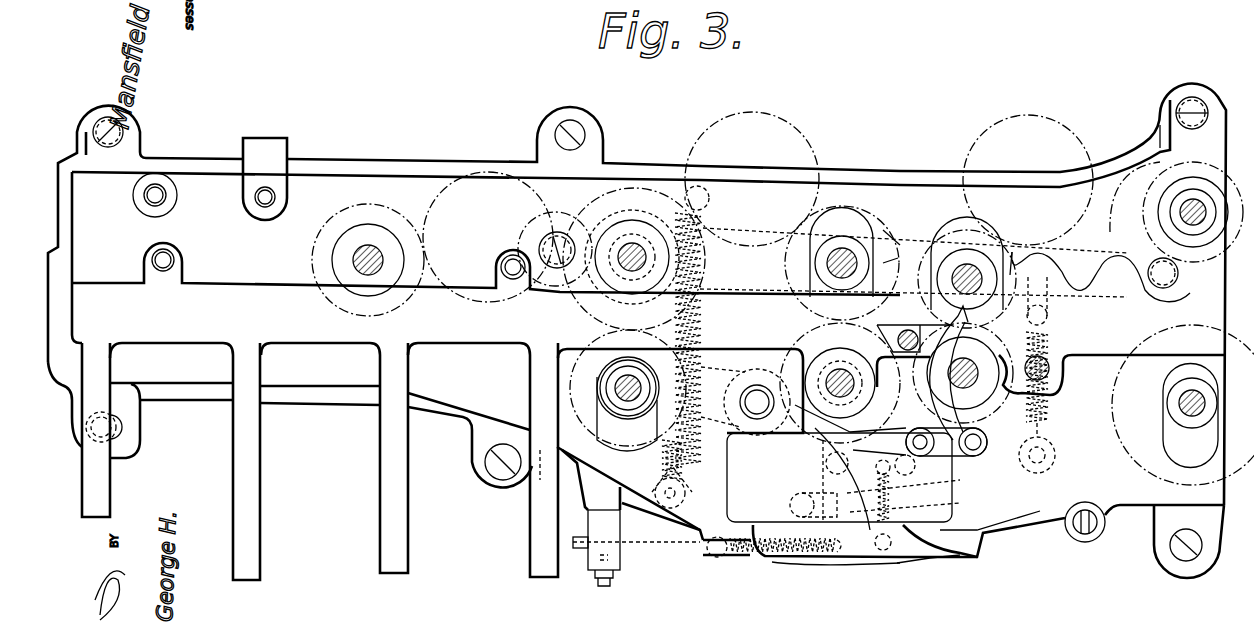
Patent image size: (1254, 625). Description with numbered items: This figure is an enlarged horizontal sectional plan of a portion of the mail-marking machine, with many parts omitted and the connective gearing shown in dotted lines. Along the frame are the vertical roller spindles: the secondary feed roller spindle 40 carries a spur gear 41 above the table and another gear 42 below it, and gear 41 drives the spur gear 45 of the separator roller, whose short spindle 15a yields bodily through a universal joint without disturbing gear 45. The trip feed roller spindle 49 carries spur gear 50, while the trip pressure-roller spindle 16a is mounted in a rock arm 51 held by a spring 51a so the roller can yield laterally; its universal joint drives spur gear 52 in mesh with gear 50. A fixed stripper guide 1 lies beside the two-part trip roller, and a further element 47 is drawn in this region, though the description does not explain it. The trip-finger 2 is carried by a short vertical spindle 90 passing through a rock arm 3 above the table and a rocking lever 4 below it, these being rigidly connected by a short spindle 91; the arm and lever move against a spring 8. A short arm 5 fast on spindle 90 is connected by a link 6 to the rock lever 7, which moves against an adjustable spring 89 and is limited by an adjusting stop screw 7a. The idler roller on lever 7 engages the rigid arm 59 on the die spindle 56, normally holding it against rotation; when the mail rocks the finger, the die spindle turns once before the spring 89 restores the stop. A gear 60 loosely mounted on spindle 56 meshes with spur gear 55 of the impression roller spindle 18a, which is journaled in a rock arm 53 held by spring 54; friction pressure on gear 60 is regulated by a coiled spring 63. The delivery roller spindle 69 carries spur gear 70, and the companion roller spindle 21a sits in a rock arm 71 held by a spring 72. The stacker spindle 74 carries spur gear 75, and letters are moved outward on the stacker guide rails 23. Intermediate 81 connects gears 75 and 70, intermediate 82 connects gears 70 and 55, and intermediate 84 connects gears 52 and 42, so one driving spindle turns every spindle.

The stripper guide 1 is at (902, 328).
The trip-finger 2 is at (978, 332).
The rock arm 3 is at (946, 453).
The rocking lever 4 is at (878, 430).
The short arm 5 is at (983, 480).
The link 6 is at (928, 495).
The rock lever 7 is at (823, 475).
The adjusting stop screw 7a is at (790, 503).
The spring 8 is at (913, 568).
The short spindle 15a is at (1192, 403).
The spindle 16a is at (967, 280).
The spindle 18a is at (845, 262).
The short spindle 21a is at (632, 400).
The stacker guide rails 23 is at (100, 483).
The vertical spindle 40 is at (1193, 212).
The spur gear 41 is at (1160, 177).
The gear 42 is at (1150, 128).
The spur gear 45 is at (1153, 473).
The spring 47 is at (1049, 372).
The vertical spindle 49 is at (963, 373).
The spur gear 50 is at (1039, 424).
The rock arm 51 is at (1070, 245).
The spring 51a is at (1050, 337).
The spur gear 52 is at (885, 262).
The rock arm 53 is at (763, 230).
The spring 54 is at (685, 468).
The spur gear 55 is at (885, 232).
The vertical spindle 56 is at (840, 366).
The rigid arm 59 is at (798, 408).
The gear 60 is at (800, 343).
The coiled spring 63 is at (987, 507).
The vertical spindle 69 is at (632, 272).
The spur gear 70 is at (577, 306).
The rock arm 71 is at (742, 401).
The spring 72 is at (704, 332).
The vertical spindle 74 is at (360, 282).
The spur gear 75 is at (313, 243).
The intermediate 81 is at (440, 203).
The intermediate 82 is at (790, 122).
The intermediate 84 is at (1003, 120).
The adjustable spring 89 is at (780, 560).
The short vertical spindle 90 is at (982, 442).
The short spindle 91 is at (920, 430).